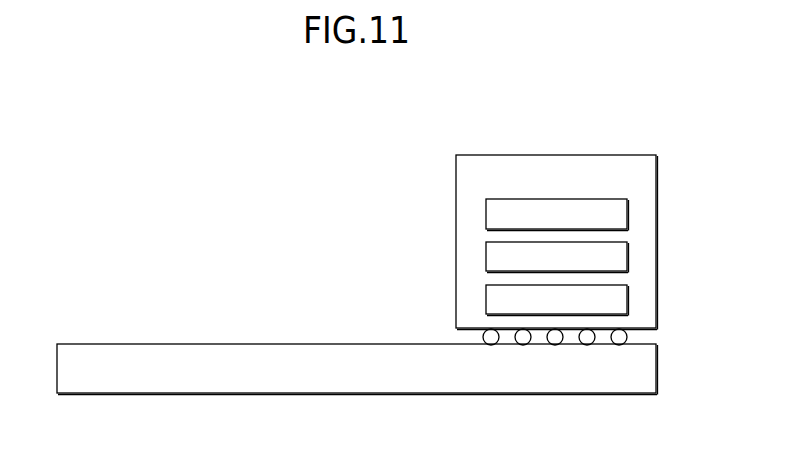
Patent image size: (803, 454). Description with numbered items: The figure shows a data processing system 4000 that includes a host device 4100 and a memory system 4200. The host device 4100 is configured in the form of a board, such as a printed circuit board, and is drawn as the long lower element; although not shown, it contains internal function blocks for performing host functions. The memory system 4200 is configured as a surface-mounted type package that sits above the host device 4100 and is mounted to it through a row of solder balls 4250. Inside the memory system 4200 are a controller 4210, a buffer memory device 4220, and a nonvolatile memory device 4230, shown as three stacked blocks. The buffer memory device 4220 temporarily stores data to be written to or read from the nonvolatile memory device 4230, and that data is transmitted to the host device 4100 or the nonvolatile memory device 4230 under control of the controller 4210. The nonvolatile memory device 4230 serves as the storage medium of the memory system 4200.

The data processing system 4000 is at (137, 127).
The host device 4100 is at (357, 369).
The memory system 4200 is at (557, 242).
The controller 4210 is at (557, 215).
The buffer memory device 4220 is at (557, 257).
The nonvolatile memory device 4230 is at (557, 300).
The solder balls 4250 is at (637, 338).